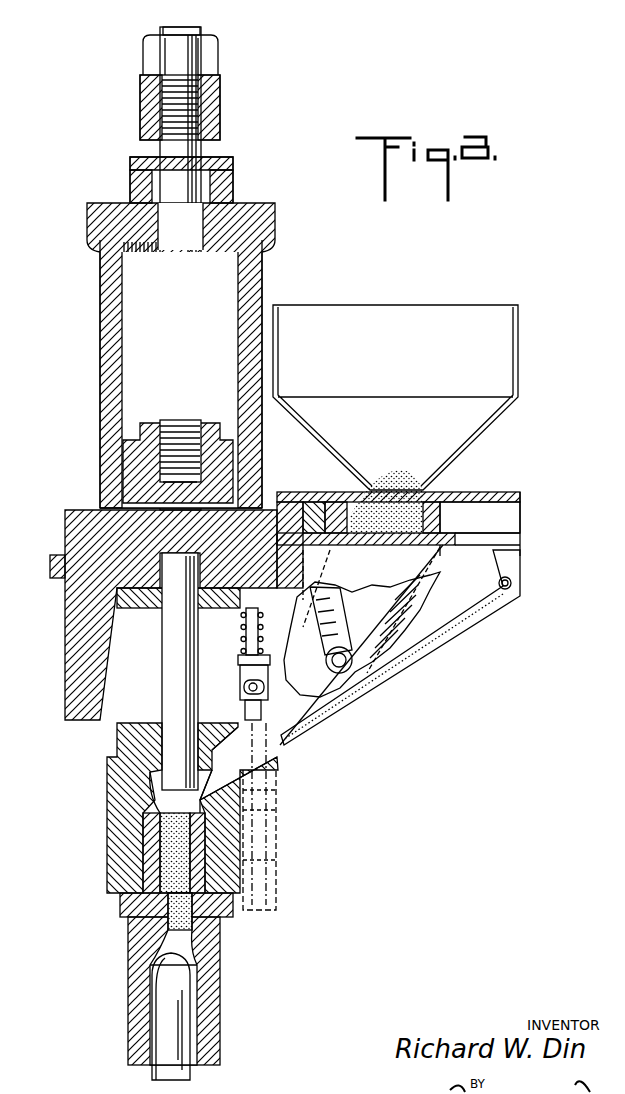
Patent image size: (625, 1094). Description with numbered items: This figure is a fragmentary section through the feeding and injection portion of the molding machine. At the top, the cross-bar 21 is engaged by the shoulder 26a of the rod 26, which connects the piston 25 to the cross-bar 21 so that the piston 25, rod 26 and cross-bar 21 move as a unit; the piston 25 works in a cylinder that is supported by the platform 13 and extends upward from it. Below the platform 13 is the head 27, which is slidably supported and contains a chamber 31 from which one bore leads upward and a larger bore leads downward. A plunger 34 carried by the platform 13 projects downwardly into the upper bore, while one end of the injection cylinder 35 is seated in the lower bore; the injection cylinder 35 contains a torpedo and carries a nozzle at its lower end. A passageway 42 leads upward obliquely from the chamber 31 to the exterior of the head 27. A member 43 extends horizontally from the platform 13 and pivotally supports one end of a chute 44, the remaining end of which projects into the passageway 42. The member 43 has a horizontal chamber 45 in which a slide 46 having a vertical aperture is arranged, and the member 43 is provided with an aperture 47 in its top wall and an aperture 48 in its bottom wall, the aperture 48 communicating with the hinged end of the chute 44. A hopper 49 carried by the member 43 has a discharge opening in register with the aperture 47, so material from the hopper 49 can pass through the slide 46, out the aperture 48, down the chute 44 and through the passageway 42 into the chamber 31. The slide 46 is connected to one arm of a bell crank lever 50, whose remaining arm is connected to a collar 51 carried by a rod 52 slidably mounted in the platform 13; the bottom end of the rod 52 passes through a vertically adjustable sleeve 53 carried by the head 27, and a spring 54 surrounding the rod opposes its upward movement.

The platform 13 is at (72, 618).
The cross-bar 21 is at (222, 98).
The piston 25 is at (133, 453).
The rod 26 is at (163, 278).
The shoulder 26a is at (203, 145).
The head 27 is at (110, 880).
The chamber 31 is at (167, 797).
The plunger 34 is at (172, 652).
The injection cylinder 35 is at (215, 975).
The passageway 42 is at (283, 765).
The member 43 is at (520, 493).
The chute 44 is at (460, 618).
The horizontal chamber 45 is at (510, 520).
The slide 46 is at (455, 495).
The aperture 47 is at (435, 487).
The aperture 48 is at (520, 545).
The hopper 49 is at (519, 370).
The bell crank lever 50 is at (345, 608).
The collar 51 is at (238, 661).
The rod 52 is at (250, 605).
The sleeve 53 is at (280, 798).
The spring 54 is at (264, 640).